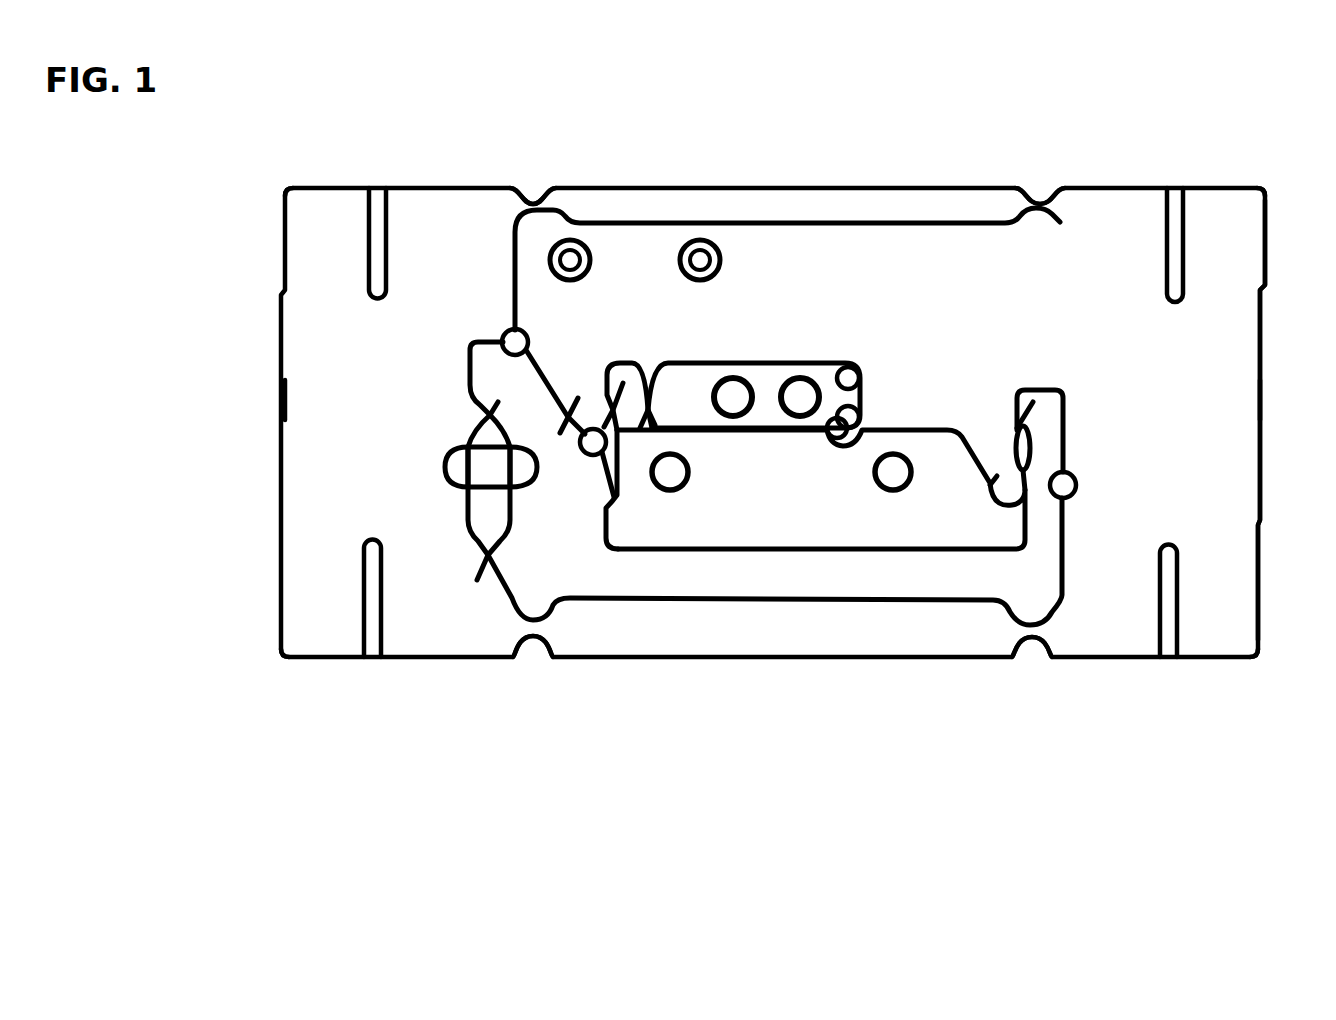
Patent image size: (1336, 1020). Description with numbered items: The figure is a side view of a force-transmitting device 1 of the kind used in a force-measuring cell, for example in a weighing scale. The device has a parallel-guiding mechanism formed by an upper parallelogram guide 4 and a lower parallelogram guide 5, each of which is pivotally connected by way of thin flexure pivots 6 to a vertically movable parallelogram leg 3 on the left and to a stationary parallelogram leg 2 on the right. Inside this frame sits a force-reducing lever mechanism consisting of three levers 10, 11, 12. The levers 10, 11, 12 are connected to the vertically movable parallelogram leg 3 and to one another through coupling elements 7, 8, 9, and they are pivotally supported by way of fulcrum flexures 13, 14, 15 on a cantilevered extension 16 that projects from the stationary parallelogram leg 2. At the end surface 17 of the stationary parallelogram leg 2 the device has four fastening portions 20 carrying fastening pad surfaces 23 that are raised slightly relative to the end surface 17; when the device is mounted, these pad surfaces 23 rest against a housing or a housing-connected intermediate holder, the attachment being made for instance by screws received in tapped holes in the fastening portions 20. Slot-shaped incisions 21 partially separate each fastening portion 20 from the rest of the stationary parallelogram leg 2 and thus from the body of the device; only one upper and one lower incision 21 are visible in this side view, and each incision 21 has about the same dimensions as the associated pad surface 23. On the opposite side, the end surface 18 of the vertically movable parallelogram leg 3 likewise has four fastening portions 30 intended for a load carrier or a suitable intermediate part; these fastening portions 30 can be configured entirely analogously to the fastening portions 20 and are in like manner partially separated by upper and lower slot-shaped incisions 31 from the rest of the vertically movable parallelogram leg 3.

The force-transmitting device 1 is at (1097, 130).
The stationary parallelogram leg 2 is at (1176, 423).
The vertically movable parallelogram leg 3 is at (378, 423).
The upper parallelogram guide 4 is at (780, 222).
The lower parallelogram guide 5 is at (770, 640).
The flexure pivot 6 is at (548, 205).
The coupling element 7 is at (483, 522).
The coupling element 8 is at (1027, 470).
The coupling element 9 is at (610, 460).
The lever 10 is at (591, 566).
The lever 11 is at (793, 509).
The lever 12 is at (694, 410).
The fulcrum flexure 13 is at (570, 412).
The fulcrum flexure 14 is at (990, 483).
The fulcrum flexure 15 is at (650, 405).
The cantilevered extension 16 is at (803, 298).
The end surface 17 is at (1262, 400).
The end surface 18 is at (305, 408).
The fastening portion 20 is at (1228, 218).
The slot-shaped incision 21 is at (1180, 217).
The fastening pad surface 23 is at (1265, 245).
The fastening portion 30 is at (318, 238).
The slot-shaped incision 31 is at (378, 225).